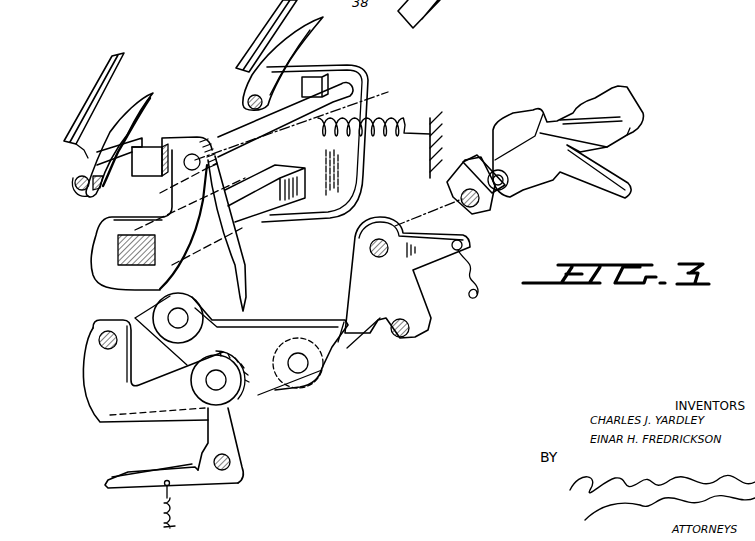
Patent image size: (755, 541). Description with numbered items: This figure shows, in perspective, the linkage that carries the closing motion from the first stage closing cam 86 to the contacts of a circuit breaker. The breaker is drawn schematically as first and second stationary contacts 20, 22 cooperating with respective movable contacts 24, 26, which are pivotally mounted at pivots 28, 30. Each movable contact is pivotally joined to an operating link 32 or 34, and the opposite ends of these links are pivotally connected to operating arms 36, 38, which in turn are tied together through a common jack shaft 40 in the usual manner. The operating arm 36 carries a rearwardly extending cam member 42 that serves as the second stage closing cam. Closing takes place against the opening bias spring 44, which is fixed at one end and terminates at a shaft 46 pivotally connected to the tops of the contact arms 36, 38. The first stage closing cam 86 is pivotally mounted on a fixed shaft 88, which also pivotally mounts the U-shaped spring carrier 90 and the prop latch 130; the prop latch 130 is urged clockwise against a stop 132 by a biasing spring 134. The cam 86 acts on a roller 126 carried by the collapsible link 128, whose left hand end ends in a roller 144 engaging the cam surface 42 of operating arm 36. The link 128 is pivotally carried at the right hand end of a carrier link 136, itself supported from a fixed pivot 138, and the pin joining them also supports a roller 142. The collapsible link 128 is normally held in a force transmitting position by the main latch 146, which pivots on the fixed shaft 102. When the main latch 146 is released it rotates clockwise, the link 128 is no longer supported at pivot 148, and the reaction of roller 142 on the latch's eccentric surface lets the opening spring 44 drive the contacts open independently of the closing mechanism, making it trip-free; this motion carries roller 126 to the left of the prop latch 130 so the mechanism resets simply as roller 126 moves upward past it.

The first stationary contact 20 is at (88, 97).
The second stationary contact 22 is at (260, 17).
The movable contact 24 is at (88, 161).
The movable contact 26 is at (303, 50).
The pivot 28 is at (75, 187).
The pivot 30 is at (248, 101).
The operating link 32 is at (144, 134).
The operating link 34 is at (305, 62).
The operating arm 36 is at (176, 189).
The operating arm 38 is at (362, 113).
The common jack shaft 40 is at (243, 218).
The cam member 42 is at (228, 274).
The opening bias spring 44 is at (399, 122).
The shaft 46 is at (238, 136).
The first stage closing cam 86 is at (525, 196).
The fixed shaft 88 is at (483, 212).
The U-shaped spring carrier 90 is at (480, 152).
The fixed shaft 102 is at (230, 462).
The roller 126 is at (276, 351).
The collapsible link 128 is at (270, 330).
The prop latch 130 is at (402, 299).
The stop 132 is at (396, 341).
The biasing spring 134 is at (467, 303).
The carrier link 136 is at (93, 375).
The fixed pivot 138 is at (97, 336).
The roller 142 is at (212, 380).
The roller 144 is at (170, 310).
The main latch 146 is at (140, 487).
The pivot 148 is at (230, 359).